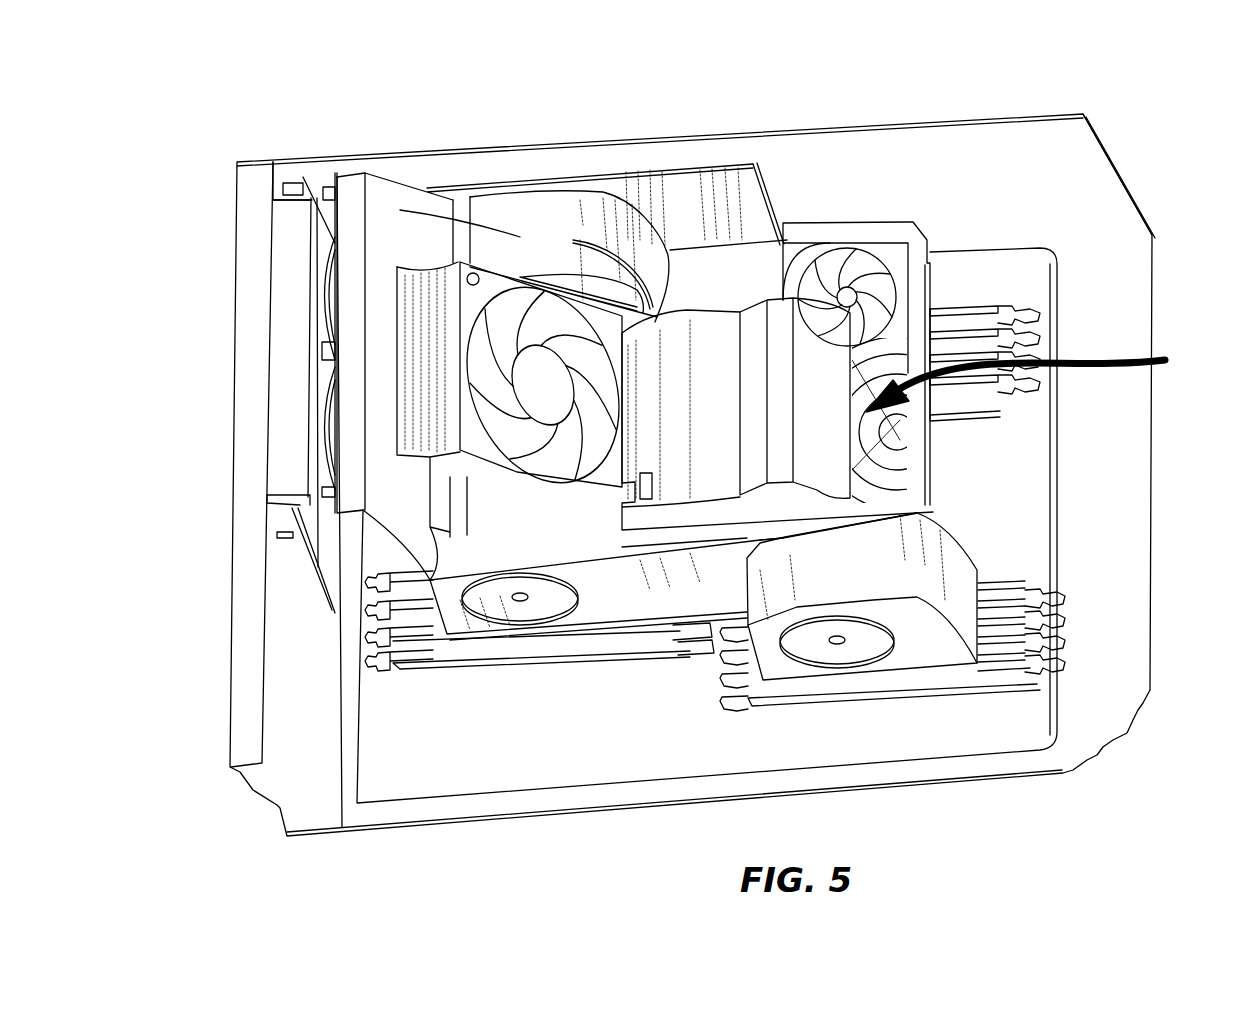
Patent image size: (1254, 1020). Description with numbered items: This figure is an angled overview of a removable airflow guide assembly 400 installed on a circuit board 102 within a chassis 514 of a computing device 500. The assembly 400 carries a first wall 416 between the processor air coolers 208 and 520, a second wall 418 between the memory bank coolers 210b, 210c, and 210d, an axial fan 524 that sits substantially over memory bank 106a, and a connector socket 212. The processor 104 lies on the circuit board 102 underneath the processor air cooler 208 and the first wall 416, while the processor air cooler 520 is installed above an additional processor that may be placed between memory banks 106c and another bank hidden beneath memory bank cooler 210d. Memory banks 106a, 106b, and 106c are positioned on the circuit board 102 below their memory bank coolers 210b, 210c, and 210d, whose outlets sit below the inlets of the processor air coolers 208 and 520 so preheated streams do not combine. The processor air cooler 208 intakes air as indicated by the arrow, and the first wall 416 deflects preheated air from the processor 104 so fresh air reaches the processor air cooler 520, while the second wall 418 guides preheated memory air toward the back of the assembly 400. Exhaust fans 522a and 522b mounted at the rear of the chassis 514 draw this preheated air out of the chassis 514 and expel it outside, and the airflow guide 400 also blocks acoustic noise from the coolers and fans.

The computing device 500 is at (265, 128).
The removable airflow guide assembly 400 is at (404, 206).
The connector socket 212 is at (857, 235).
The axial fan 524 is at (870, 265).
The circuit board 102 is at (992, 268).
The chassis 514 is at (1118, 172).
The memory bank cooler 210d is at (520, 237).
The exhaust fan 522b is at (330, 303).
The processor air cooler 520 is at (530, 385).
The exhaust fan 522a is at (300, 527).
The memory bank 106a is at (972, 312).
The processor air cooler 208 is at (905, 431).
The processor 104 is at (940, 491).
The memory bank cooler 210c is at (480, 597).
The memory bank 106c is at (405, 640).
The memory bank 106b is at (1010, 593).
The second wall 418 is at (617, 580).
The first wall 416 is at (703, 447).
The memory bank cooler 210b is at (850, 650).